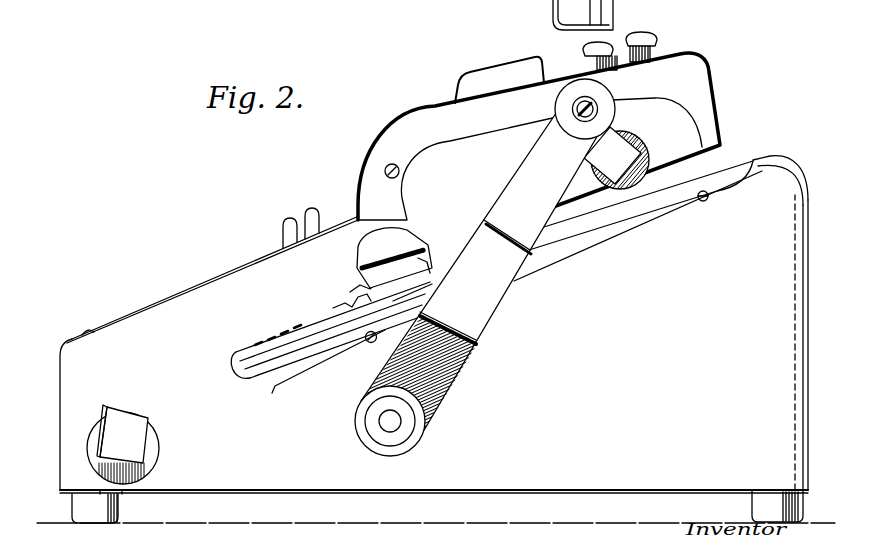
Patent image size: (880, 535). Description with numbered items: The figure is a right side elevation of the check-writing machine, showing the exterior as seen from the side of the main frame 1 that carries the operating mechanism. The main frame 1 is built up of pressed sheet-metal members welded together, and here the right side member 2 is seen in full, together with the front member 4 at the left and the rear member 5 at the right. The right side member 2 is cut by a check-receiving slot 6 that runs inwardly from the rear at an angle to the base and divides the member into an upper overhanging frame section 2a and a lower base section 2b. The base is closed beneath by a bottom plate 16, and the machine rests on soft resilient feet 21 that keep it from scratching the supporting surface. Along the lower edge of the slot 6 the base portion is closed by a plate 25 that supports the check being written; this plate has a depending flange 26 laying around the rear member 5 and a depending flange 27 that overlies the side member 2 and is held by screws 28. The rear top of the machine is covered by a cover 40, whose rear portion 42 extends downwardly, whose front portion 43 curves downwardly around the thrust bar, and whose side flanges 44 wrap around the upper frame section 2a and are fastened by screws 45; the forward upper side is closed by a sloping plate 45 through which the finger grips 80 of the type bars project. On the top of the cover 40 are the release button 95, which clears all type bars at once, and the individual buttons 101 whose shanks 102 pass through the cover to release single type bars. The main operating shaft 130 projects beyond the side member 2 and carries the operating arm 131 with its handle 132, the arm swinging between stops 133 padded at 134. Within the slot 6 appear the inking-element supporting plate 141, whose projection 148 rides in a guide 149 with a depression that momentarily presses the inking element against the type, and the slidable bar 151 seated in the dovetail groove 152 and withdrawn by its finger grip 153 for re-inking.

The main frame 1 is at (805, 491).
The right side member 2 is at (562, 366).
The upper overhanging frame section 2a is at (486, 175).
The lower base section 2b is at (667, 332).
The front member 4 is at (60, 428).
The rear member 5 is at (806, 309).
The check-receiving slot 6 is at (231, 364).
The bottom plate 16 is at (378, 492).
The feet 21 is at (120, 511).
The plate 25 is at (640, 210).
The depending flange 26 is at (795, 167).
The depending flanges 27 is at (524, 282).
The screws 28 is at (368, 345).
The cover 40 is at (435, 103).
The rear portion 42 is at (712, 78).
The front portion 43 is at (371, 148).
The side flanges 44 is at (472, 136).
The plate 45 is at (196, 286).
The finger grip 80 is at (311, 208).
The release button 95 is at (494, 70).
The individual buttons 101 is at (612, 38).
The shanks 102 is at (620, 58).
The main operating shaft 130 is at (389, 420).
The operating arm 131 is at (484, 289).
The handle 132 is at (610, 93).
The stops 133 is at (630, 166).
The padding 134 is at (585, 155).
The supporting plate 141 is at (290, 336).
The projection 148 is at (336, 306).
The guides 149 is at (353, 288).
The bar 151 is at (409, 262).
The dovetail groove 152 is at (399, 300).
The finger grip 153 is at (372, 253).